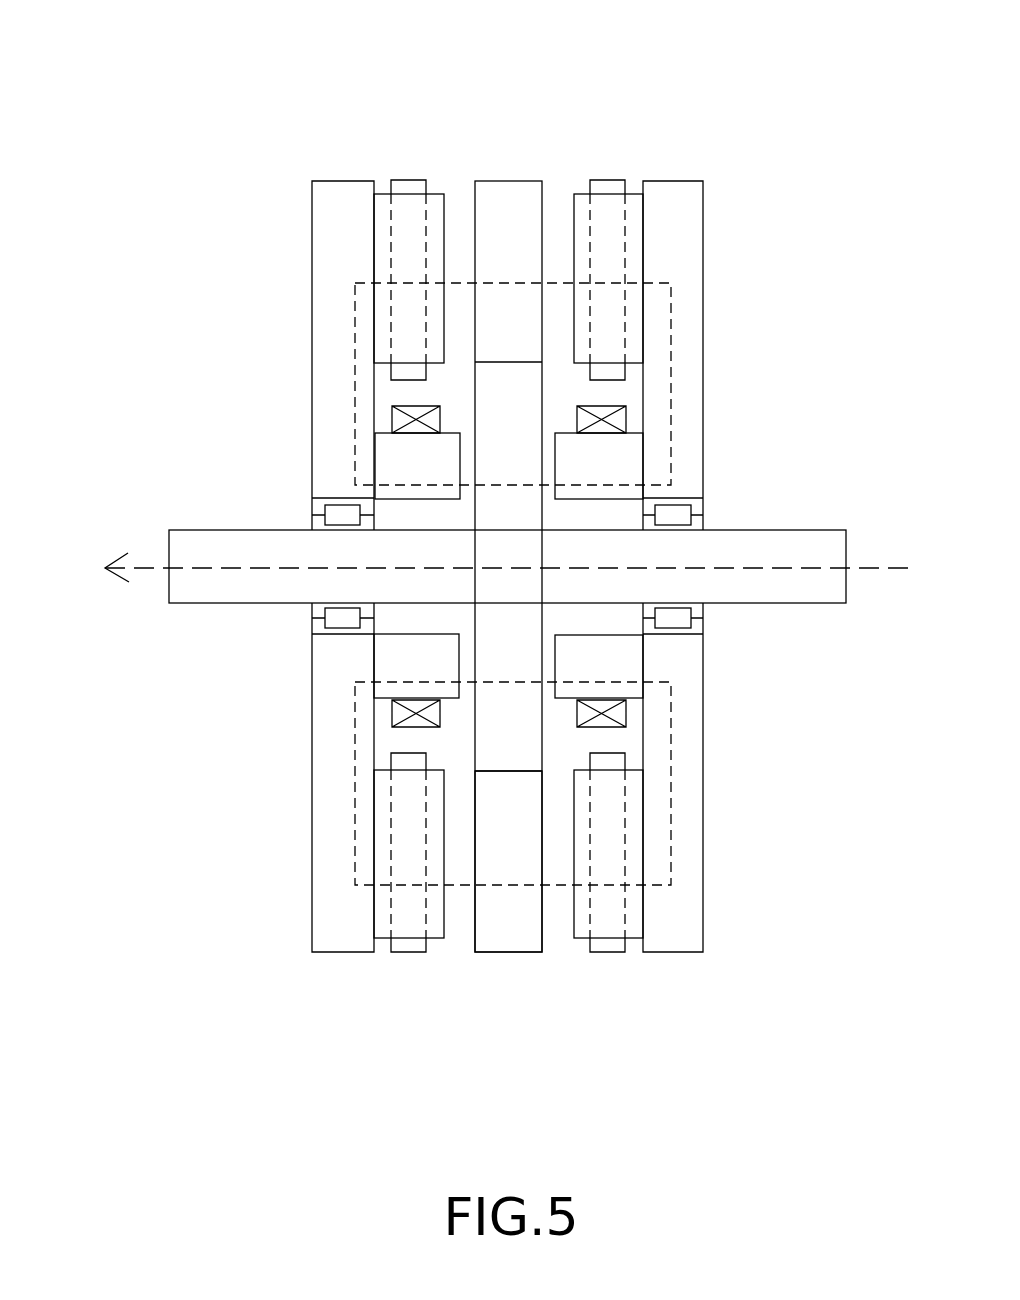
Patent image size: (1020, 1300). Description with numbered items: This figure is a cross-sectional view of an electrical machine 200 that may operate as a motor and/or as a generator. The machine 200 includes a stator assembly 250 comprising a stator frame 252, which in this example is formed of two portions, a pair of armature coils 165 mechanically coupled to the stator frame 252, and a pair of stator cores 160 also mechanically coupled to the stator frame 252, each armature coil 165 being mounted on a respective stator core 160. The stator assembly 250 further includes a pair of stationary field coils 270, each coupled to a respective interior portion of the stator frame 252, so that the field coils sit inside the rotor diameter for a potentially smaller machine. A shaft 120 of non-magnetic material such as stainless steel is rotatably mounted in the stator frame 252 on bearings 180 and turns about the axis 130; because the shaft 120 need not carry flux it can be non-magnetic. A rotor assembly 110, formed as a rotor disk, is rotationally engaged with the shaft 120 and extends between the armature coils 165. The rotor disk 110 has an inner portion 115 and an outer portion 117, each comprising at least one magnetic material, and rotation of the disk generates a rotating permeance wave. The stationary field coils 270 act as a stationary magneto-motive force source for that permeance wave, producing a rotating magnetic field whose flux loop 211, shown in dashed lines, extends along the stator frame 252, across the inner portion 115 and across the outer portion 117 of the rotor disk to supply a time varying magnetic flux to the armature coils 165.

The electrical machine 200 is at (878, 63).
The stator assembly 250 is at (673, 150).
The stator frame 252 is at (685, 650).
The flux loop 211 is at (353, 330).
The stator cores 160 is at (635, 333).
The armature coils 165 is at (403, 371).
The stationary field coil 270 is at (392, 418).
The bearings 180 is at (312, 512).
The shaft 120 is at (817, 588).
The axis of rotation 130 is at (481, 567).
The rotor assembly 110 is at (519, 1000).
The inner portion 115 is at (513, 745).
The outer portion 117 is at (497, 930).